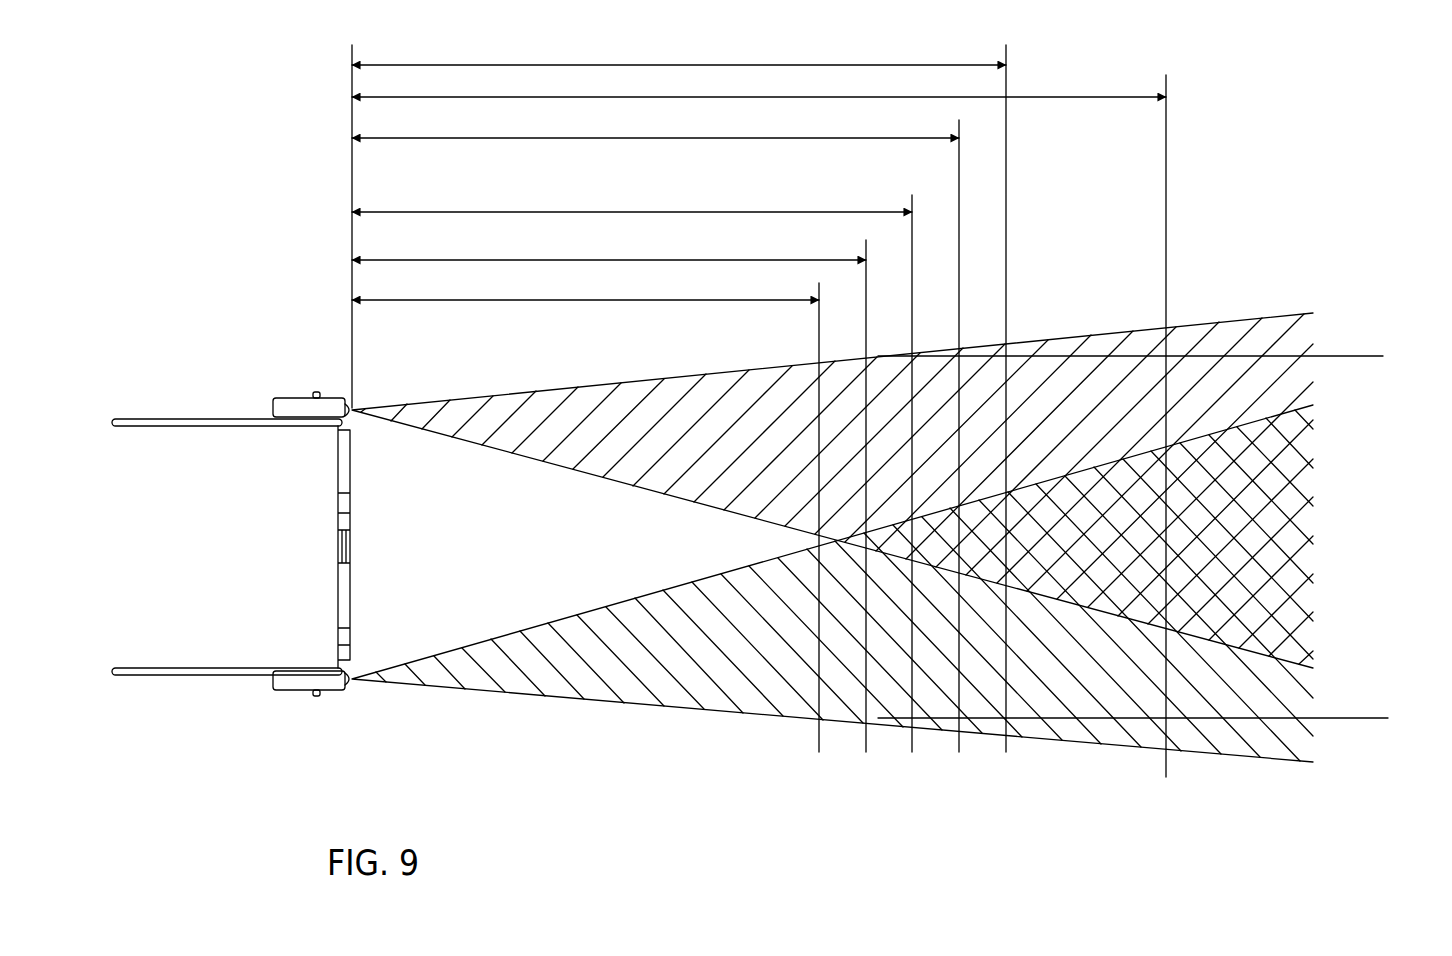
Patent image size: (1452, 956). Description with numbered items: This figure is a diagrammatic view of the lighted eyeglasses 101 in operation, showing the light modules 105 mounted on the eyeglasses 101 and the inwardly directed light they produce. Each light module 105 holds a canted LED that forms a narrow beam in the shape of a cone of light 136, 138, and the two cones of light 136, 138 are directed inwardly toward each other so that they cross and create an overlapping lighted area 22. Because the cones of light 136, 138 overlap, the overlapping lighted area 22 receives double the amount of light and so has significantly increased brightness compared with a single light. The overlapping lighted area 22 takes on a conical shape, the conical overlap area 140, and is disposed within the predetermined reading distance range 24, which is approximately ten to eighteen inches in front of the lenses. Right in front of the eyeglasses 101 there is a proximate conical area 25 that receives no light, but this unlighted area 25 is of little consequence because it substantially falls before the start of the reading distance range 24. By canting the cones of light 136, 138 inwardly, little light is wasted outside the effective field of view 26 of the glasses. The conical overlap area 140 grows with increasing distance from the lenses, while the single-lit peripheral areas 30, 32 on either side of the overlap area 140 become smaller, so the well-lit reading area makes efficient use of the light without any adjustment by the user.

The reading distance range 24 is at (540, 54).
The eyeglasses 101 is at (196, 680).
The light modules 105 is at (288, 395).
The cone of light 136 is at (486, 410).
The cone of light 138 is at (569, 672).
The proximate conical area 25 is at (428, 604).
The peripheral area 30 is at (1212, 387).
The peripheral area 32 is at (1223, 693).
The effective field of view 26 is at (1380, 406).
The overlapping lighted area 22 is at (1370, 686).
The conical overlap area 140 is at (1300, 567).